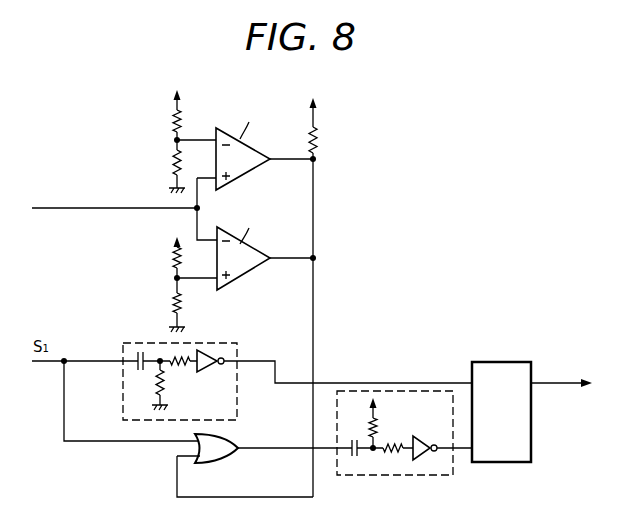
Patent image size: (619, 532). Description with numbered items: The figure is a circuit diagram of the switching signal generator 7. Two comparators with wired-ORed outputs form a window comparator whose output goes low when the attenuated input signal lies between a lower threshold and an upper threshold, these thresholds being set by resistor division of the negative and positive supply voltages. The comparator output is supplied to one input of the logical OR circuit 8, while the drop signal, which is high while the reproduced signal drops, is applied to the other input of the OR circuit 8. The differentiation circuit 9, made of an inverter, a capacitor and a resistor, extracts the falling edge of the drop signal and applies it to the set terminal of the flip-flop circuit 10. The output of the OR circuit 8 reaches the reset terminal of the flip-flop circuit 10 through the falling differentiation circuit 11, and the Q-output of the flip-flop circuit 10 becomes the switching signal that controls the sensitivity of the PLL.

The switching signal generator 7 is at (340, 116).
The logical OR circuit 8 is at (228, 460).
The differentiation circuit 9 is at (214, 343).
The flip-flop circuit 10 is at (497, 362).
The falling differentiation circuit 11 is at (408, 476).